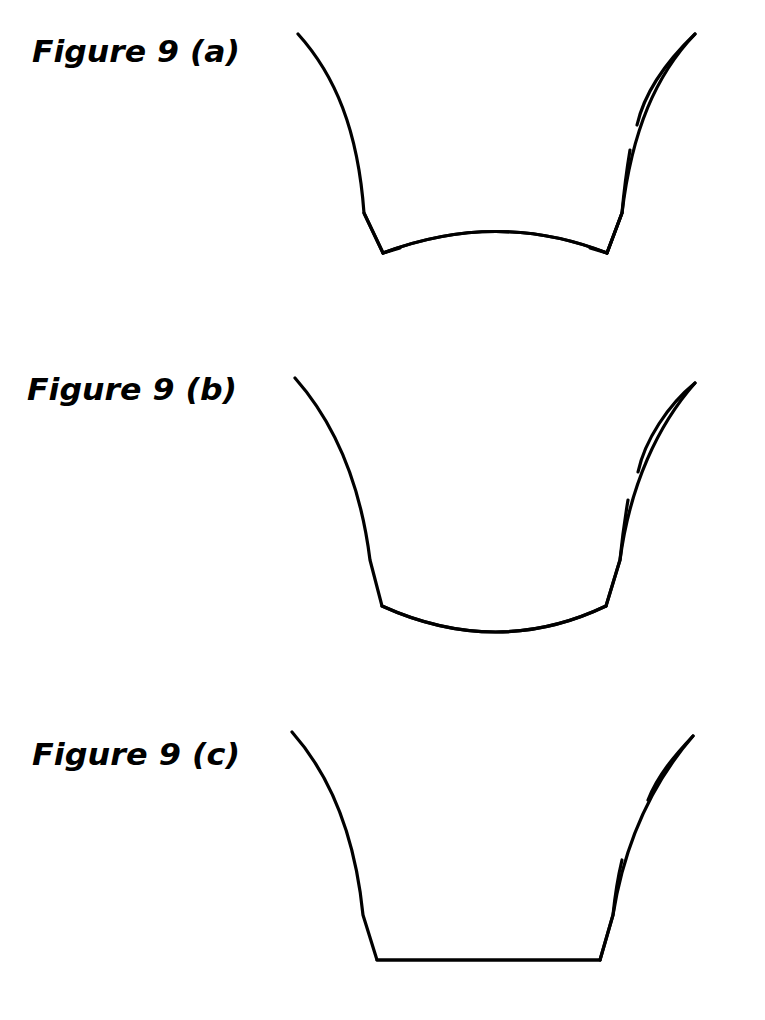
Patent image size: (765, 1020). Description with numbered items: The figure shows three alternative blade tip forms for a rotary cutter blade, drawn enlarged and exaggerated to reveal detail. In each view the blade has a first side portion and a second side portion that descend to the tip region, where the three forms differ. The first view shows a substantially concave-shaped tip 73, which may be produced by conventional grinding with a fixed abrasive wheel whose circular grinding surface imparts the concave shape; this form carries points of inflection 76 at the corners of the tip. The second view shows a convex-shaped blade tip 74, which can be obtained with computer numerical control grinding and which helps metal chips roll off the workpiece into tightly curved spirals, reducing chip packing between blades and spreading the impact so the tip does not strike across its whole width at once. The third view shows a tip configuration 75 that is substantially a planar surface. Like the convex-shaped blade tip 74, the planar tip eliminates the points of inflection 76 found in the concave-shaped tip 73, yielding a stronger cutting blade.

The concave-shaped tip 73 is at (497, 232).
The convex-shaped blade tip 74 is at (497, 632).
The planar tip configuration 75 is at (494, 960).
The points of inflection 76 is at (386, 260).